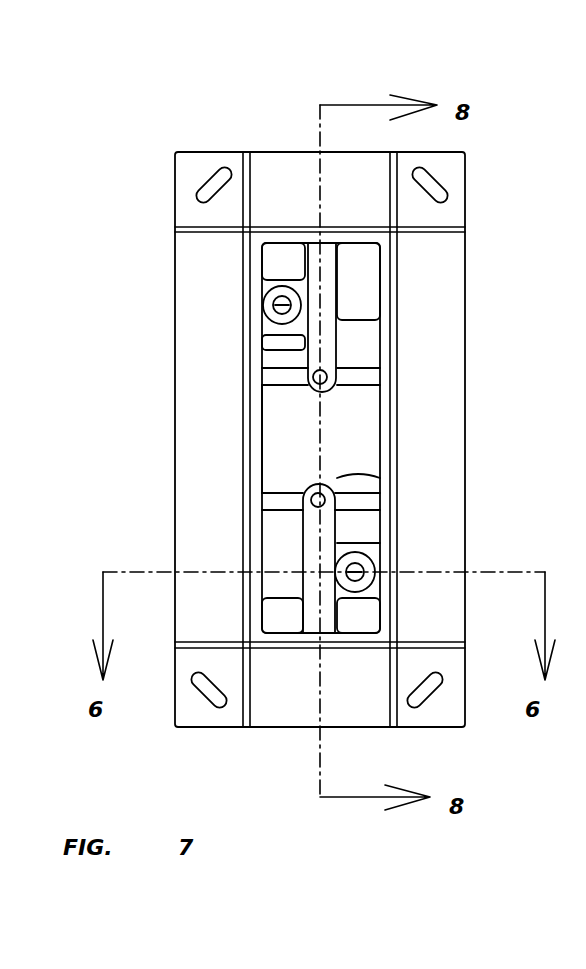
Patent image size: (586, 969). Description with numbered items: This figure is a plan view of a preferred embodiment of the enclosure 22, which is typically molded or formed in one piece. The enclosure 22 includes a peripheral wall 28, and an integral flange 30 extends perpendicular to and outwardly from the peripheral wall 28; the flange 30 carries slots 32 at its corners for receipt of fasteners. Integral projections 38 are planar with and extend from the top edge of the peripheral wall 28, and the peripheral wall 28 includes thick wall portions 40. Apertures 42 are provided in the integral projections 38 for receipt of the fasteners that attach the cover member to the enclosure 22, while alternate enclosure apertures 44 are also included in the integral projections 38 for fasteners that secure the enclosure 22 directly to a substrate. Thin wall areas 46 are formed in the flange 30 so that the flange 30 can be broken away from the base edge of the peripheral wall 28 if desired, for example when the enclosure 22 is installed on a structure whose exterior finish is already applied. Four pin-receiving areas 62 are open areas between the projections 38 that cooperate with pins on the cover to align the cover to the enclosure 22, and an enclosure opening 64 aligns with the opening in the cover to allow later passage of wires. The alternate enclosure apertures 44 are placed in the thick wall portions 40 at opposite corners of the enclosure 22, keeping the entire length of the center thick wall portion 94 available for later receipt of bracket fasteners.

The enclosure 22 is at (172, 106).
The peripheral wall 28 is at (385, 448).
The flange 30 is at (445, 343).
The slots 32 is at (430, 188).
The integral projections 38 is at (352, 322).
The thick wall portions 40 is at (300, 343).
The apertures 42 is at (333, 392).
The alternate enclosure apertures 44 is at (282, 305).
The thin wall areas 46 is at (243, 445).
The pin-receiving areas 62 is at (275, 258).
The enclosure opening 64 is at (282, 408).
The center thick wall portion 94 is at (313, 536).